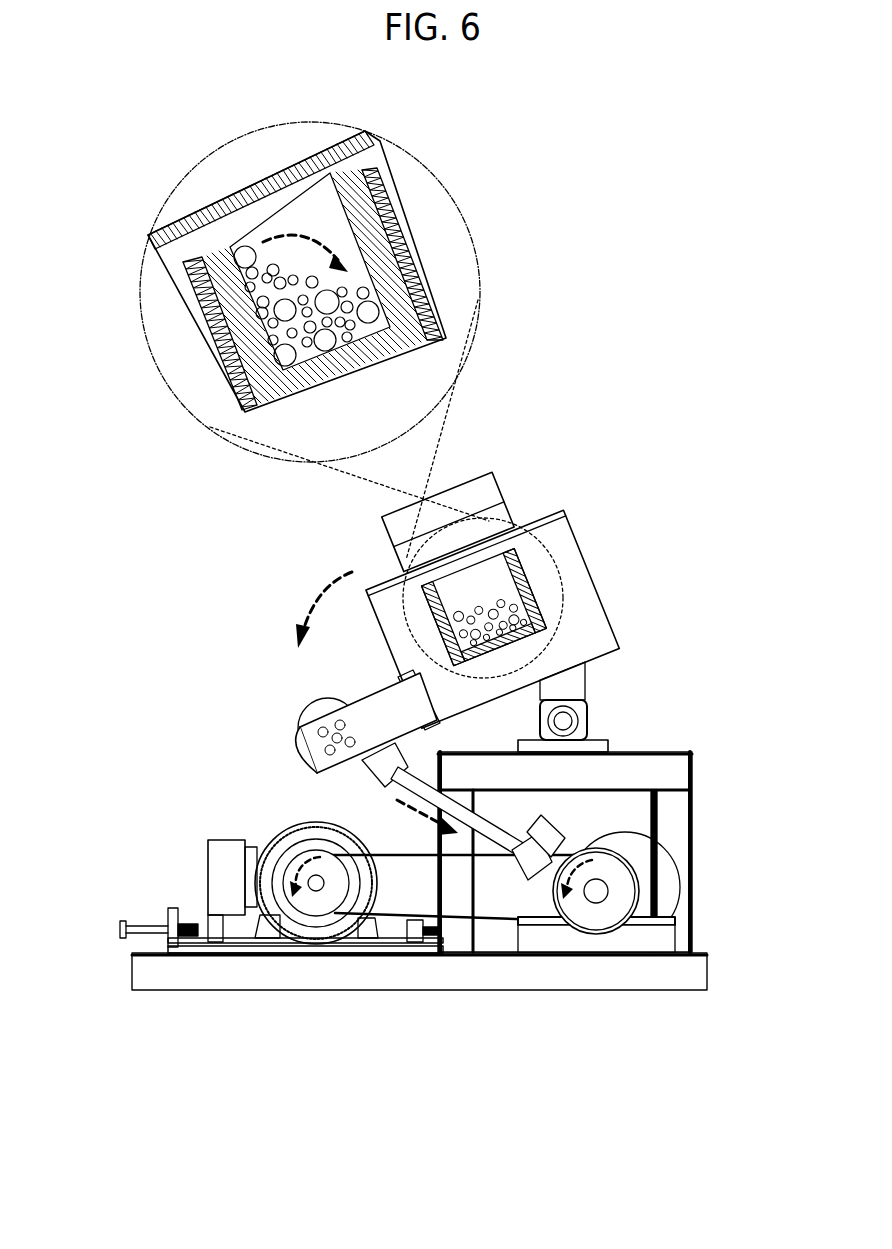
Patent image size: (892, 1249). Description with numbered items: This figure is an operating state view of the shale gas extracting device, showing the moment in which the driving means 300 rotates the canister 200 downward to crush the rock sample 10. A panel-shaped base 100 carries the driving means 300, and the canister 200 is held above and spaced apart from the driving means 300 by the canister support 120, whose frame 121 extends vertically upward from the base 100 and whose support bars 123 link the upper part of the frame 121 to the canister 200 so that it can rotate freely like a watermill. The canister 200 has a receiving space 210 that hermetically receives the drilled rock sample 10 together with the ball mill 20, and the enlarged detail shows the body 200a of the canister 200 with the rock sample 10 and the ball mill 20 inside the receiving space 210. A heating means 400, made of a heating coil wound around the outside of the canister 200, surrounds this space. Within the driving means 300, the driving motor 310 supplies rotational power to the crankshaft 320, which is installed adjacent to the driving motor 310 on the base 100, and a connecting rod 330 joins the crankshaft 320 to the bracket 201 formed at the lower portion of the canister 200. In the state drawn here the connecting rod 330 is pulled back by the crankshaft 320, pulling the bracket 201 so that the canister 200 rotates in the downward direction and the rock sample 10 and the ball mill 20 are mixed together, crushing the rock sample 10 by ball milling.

The rock sample 10 is at (250, 302).
The ball mill 20 is at (192, 292).
The base 100 is at (685, 972).
The canister support 120 is at (703, 664).
The frame 121 is at (632, 768).
The support bar 123 is at (562, 684).
The canister 200 is at (522, 506).
The body 200a is at (297, 375).
The bracket 201 is at (377, 707).
The receiving space 210 is at (313, 232).
The driving means 300 is at (400, 927).
The driving motor 310 is at (323, 923).
The crankshaft 320 is at (596, 898).
The connecting rod 330 is at (490, 825).
The heating means 400 is at (428, 283).